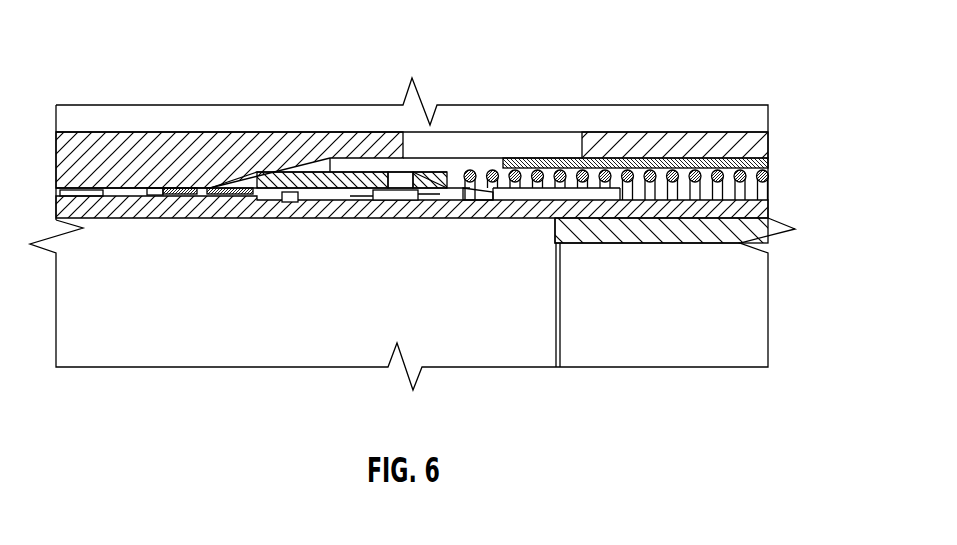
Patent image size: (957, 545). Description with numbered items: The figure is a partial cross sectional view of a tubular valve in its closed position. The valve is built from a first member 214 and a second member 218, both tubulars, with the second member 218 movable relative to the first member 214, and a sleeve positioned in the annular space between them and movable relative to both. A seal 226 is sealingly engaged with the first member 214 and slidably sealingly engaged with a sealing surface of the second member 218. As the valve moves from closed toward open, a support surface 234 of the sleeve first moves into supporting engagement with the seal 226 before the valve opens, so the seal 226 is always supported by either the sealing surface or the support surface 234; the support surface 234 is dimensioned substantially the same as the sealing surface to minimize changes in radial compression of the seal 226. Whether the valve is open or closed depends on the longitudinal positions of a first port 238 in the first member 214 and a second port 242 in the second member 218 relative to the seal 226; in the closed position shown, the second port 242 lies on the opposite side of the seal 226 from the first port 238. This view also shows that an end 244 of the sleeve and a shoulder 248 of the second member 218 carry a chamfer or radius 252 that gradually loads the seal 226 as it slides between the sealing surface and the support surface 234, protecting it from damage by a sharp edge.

The first member 214 is at (130, 187).
The second member 218 is at (340, 132).
The seal 226 is at (233, 188).
The support surface 234 is at (345, 193).
The first port 238 is at (63, 204).
The second port 242 is at (585, 143).
The end 244 is at (250, 176).
The shoulder 248 is at (200, 187).
The chamfer or radius 252 is at (215, 186).